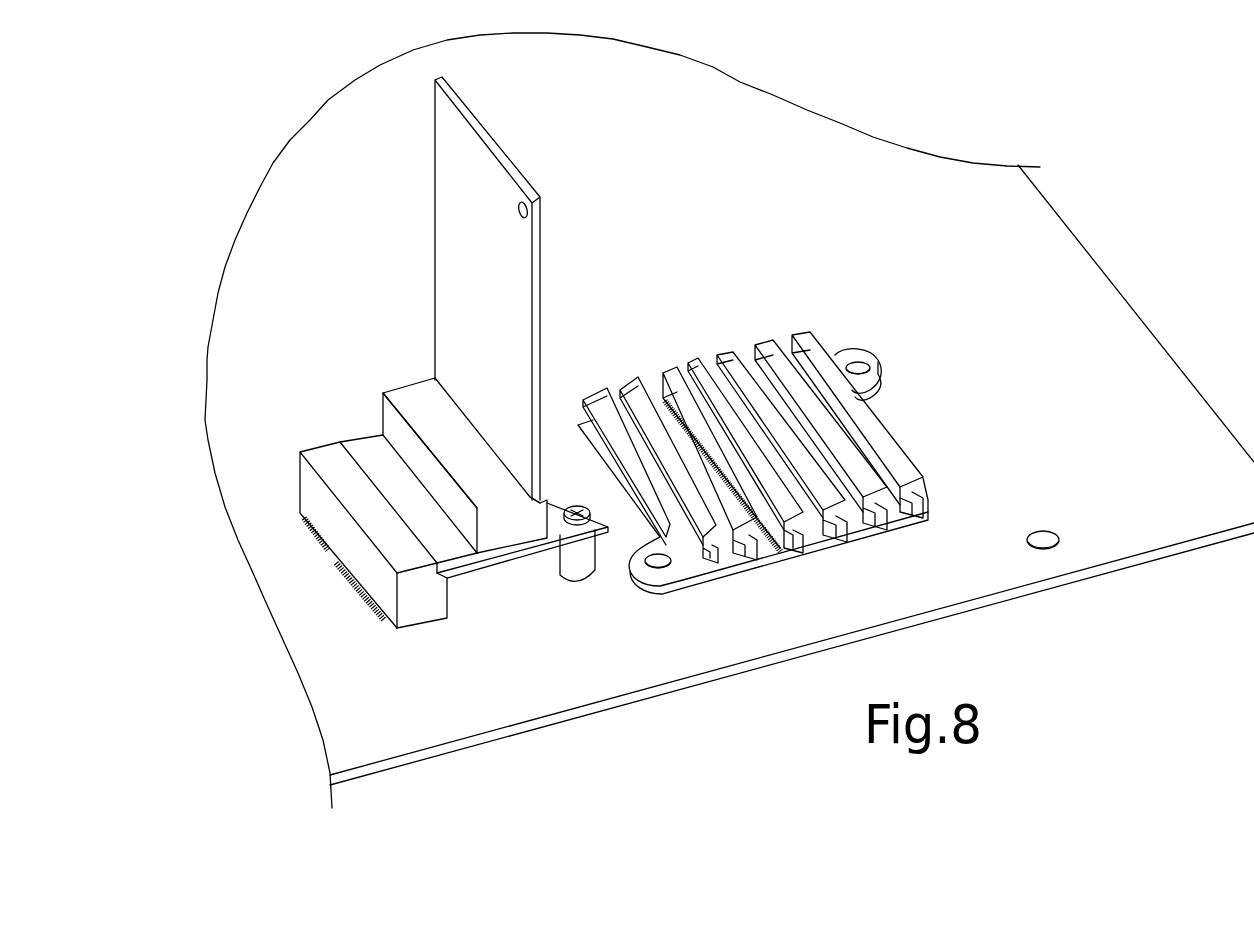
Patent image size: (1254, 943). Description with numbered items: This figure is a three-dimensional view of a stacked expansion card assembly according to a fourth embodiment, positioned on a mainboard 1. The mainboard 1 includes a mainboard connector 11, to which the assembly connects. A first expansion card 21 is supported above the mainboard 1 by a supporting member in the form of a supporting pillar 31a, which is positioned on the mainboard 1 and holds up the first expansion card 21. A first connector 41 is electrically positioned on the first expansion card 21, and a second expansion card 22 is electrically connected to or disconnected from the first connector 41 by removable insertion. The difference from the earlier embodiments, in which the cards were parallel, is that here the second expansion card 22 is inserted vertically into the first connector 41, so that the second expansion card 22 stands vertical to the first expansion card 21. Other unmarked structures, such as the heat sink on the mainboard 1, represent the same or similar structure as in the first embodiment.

The mainboard 1 is at (545, 668).
The mainboard connector 11 is at (422, 612).
The first expansion card 21 is at (370, 462).
The second expansion card 22 is at (450, 190).
The supporting pillar 31a is at (585, 567).
The first connector 41 is at (410, 393).